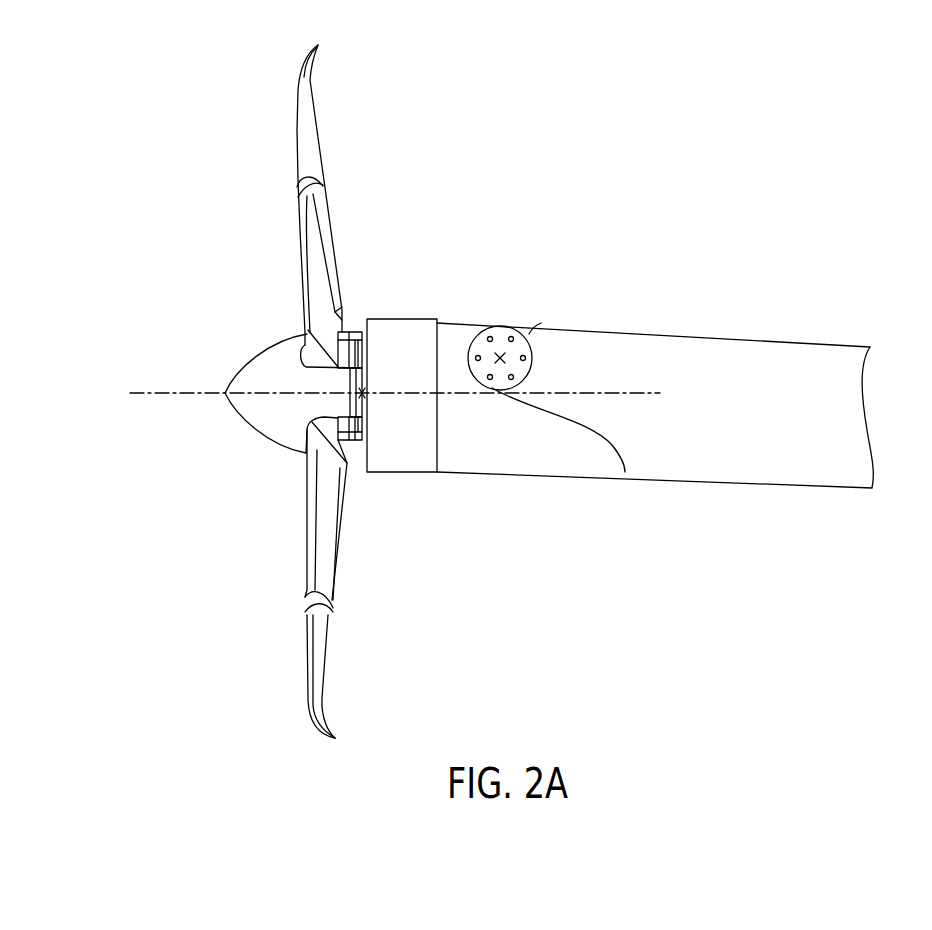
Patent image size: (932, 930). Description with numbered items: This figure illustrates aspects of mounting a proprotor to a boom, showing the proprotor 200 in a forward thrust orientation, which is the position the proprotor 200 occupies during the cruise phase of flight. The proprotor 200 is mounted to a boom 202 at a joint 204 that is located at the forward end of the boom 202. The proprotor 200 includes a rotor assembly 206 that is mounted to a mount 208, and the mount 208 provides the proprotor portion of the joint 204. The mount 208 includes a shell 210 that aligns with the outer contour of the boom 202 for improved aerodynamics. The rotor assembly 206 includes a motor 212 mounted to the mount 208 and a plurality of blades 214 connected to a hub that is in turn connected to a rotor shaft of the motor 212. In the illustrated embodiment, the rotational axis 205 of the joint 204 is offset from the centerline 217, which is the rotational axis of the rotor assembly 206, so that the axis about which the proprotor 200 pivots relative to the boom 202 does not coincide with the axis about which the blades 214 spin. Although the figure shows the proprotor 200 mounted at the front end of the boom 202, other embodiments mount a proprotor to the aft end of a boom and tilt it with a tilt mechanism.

The proprotor 200 is at (222, 250).
The boom 202 is at (605, 330).
The joint 204 is at (508, 330).
The rotational axis 205 is at (510, 356).
The rotor assembly 206 is at (369, 254).
The mount 208 is at (455, 320).
The shell 210 is at (523, 470).
The motor 212 is at (418, 453).
The blades 214 is at (305, 557).
The centerline 217 is at (158, 397).